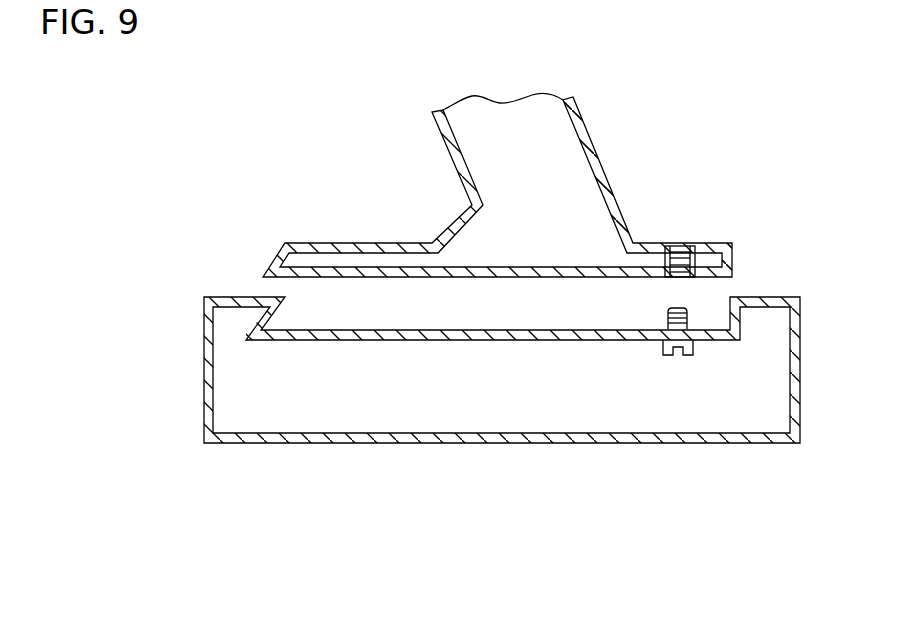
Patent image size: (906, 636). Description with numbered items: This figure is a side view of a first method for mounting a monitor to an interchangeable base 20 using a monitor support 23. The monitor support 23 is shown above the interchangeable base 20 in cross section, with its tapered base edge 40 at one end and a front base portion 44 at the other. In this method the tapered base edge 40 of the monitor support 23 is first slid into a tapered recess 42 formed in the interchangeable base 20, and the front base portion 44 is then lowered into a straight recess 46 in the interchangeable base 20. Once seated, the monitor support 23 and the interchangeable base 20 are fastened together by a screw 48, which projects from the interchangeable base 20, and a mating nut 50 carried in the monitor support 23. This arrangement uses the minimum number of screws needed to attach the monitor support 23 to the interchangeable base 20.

The interchangeable base 20 is at (235, 443).
The monitor support 23 is at (598, 160).
The tapered base edge 40 is at (272, 260).
The tapered recess 42 is at (260, 329).
The front base portion 44 is at (731, 259).
The straight recess 46 is at (522, 342).
The screw 48 is at (666, 356).
The mating nut 50 is at (674, 248).